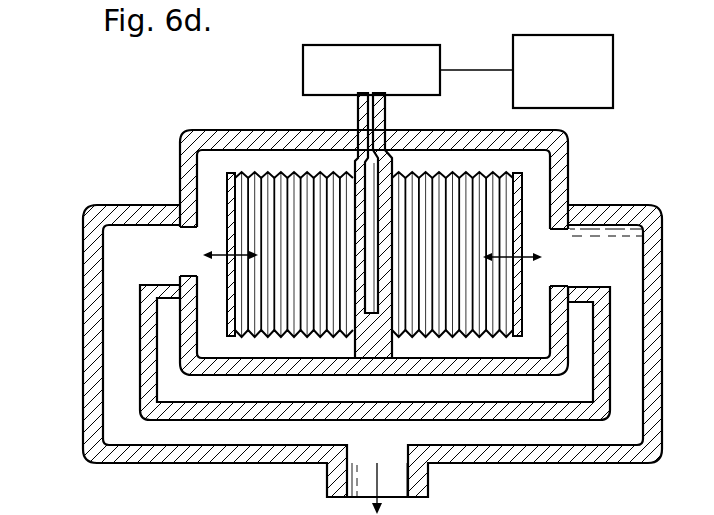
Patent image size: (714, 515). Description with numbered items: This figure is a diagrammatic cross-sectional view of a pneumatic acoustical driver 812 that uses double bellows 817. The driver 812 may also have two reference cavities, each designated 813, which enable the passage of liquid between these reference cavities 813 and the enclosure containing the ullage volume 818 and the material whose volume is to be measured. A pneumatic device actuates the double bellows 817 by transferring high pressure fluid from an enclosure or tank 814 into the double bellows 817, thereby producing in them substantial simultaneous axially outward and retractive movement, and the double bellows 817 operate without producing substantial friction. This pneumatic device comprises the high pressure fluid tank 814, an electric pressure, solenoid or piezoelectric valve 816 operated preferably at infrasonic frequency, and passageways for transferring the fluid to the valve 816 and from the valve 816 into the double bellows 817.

The pneumatic acoustical driver 812 is at (64, 281).
The reference cavity 813 is at (290, 147).
The high pressure fluid tank 814 is at (582, 82).
The valve 816 is at (388, 76).
The double bellows 817 is at (230, 170).
The ullage volume 818 is at (345, 473).